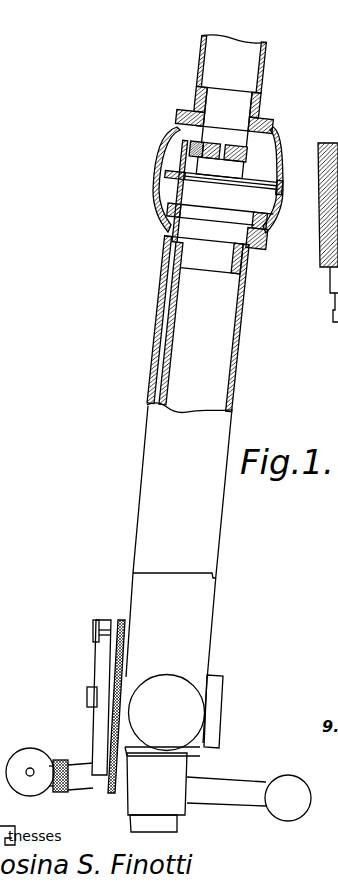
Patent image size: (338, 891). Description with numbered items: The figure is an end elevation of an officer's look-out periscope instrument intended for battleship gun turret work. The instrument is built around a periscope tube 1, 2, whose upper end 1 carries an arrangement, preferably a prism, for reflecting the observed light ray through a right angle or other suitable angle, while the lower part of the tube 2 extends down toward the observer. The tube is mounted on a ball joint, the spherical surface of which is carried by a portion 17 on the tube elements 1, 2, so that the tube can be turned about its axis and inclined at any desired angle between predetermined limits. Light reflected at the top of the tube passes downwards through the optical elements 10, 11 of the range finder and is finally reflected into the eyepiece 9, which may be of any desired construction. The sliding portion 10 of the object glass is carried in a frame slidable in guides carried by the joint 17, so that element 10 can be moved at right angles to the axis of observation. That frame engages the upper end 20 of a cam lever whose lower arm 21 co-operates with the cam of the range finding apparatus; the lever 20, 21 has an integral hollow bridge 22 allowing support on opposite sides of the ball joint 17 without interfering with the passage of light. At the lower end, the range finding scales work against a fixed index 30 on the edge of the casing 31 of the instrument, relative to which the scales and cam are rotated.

The upper end of periscope tube 1 is at (264, 65).
The periscope tube 2 is at (234, 343).
The eyepiece 9 is at (193, 707).
The sliding optical element 10 is at (212, 147).
The optical element 11 is at (235, 147).
The ball joint portion 17 is at (278, 224).
The upper end of cam lever 20 is at (183, 158).
The lower arm of cam lever 21 is at (163, 373).
The hollow bridge 22 is at (176, 224).
The fixed index 30 is at (124, 684).
The casing 31 is at (123, 622).